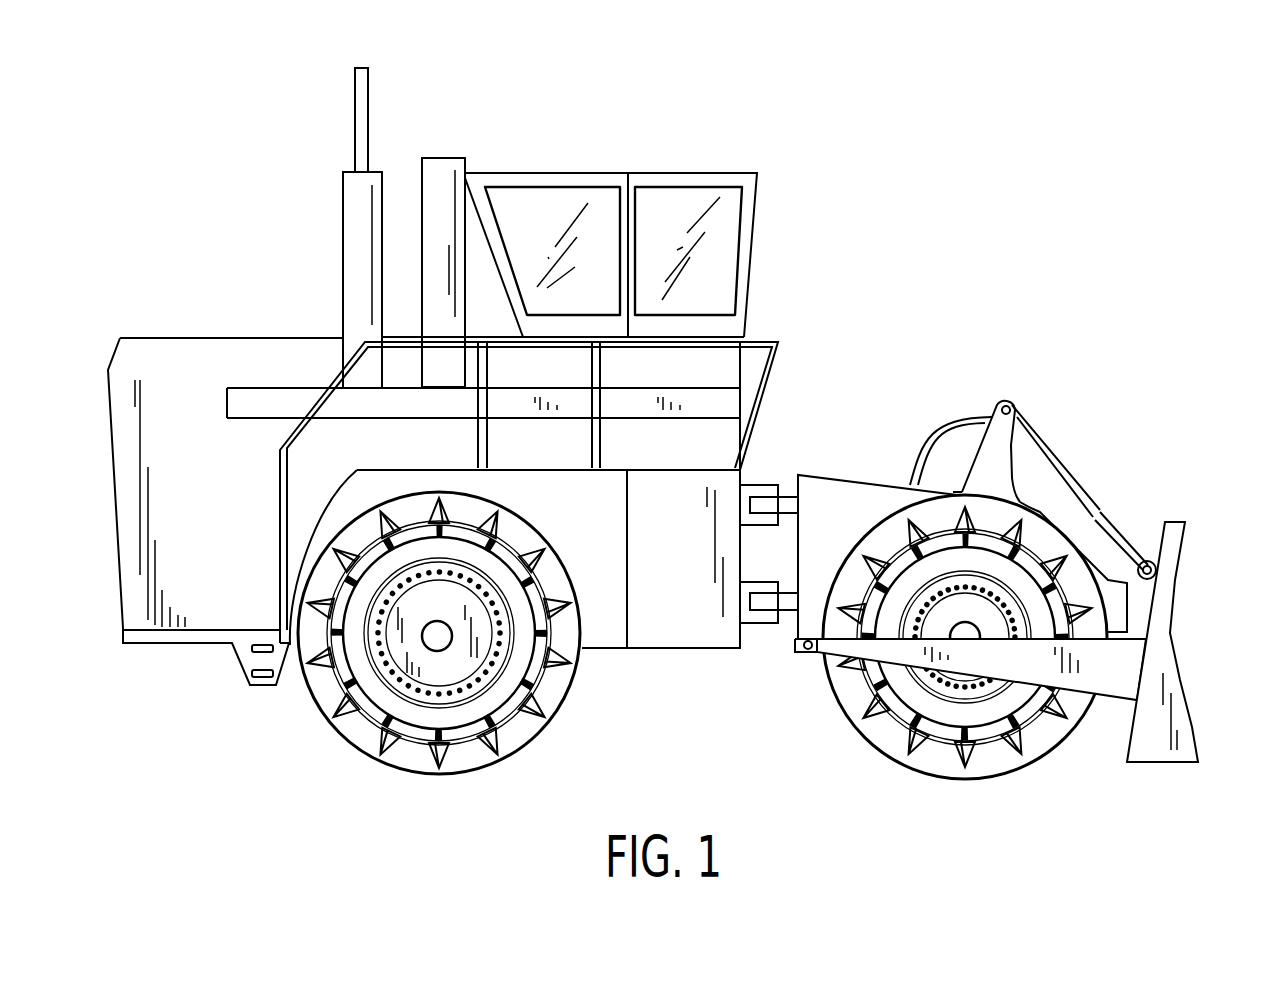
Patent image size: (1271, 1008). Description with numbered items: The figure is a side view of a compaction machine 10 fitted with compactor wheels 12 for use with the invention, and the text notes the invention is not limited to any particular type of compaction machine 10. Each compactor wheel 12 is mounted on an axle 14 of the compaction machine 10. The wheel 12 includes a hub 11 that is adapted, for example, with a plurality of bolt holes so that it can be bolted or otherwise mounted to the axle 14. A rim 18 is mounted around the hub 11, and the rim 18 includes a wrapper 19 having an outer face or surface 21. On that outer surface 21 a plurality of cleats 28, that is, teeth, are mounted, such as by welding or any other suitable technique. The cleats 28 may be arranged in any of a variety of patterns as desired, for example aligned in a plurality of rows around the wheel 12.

The compaction machine 10 is at (825, 352).
The hub 11 is at (385, 705).
The compactor wheel 12 is at (565, 700).
The axle 14 is at (445, 620).
The rim 18 is at (323, 627).
The wrapper 19 is at (514, 735).
The outer face or surface 21 is at (412, 745).
The cleat 28 is at (320, 688).